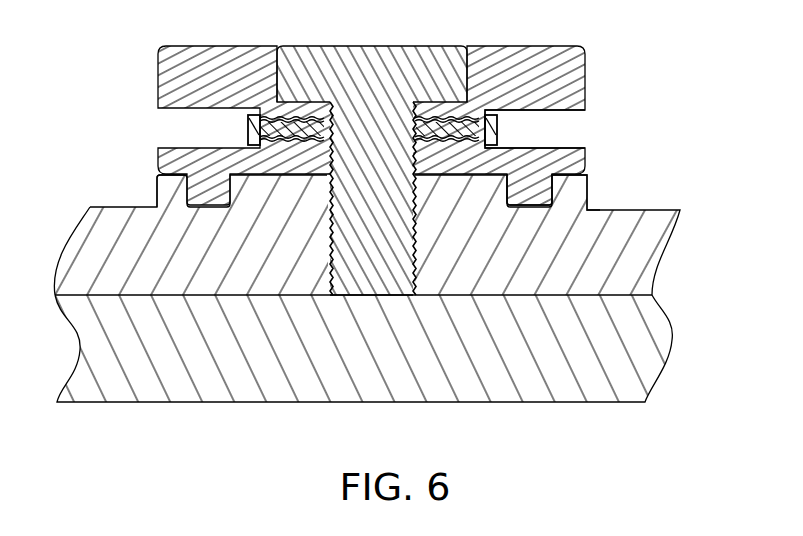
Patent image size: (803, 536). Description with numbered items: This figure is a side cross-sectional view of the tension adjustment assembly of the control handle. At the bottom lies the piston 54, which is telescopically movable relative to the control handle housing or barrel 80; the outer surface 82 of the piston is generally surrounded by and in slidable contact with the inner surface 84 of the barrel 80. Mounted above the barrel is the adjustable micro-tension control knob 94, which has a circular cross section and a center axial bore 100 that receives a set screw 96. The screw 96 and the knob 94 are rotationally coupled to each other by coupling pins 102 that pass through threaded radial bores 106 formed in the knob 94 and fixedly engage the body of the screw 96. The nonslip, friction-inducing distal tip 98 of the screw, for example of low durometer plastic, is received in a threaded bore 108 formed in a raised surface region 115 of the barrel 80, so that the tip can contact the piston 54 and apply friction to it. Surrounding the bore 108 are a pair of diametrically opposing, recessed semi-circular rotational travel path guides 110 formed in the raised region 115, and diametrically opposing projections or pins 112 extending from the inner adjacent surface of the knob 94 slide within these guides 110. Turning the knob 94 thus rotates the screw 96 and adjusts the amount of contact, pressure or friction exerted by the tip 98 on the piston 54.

The piston 54 is at (432, 385).
The barrel 80 is at (648, 270).
The outer surface of the piston 82 is at (215, 297).
The inner surface of the barrel 84 is at (120, 295).
The micro-tension control knob 94 is at (178, 84).
The set screw 96 is at (364, 63).
The friction-inducing tip 98 is at (372, 282).
The center axial bore 100 is at (463, 72).
The coupling pins 102 is at (497, 133).
The threaded radial bores 106 is at (563, 102).
The threaded bore 108 is at (418, 235).
The rotational travel path guide 110 is at (578, 188).
The projections 112 is at (531, 200).
The raised surface region 115 is at (157, 178).